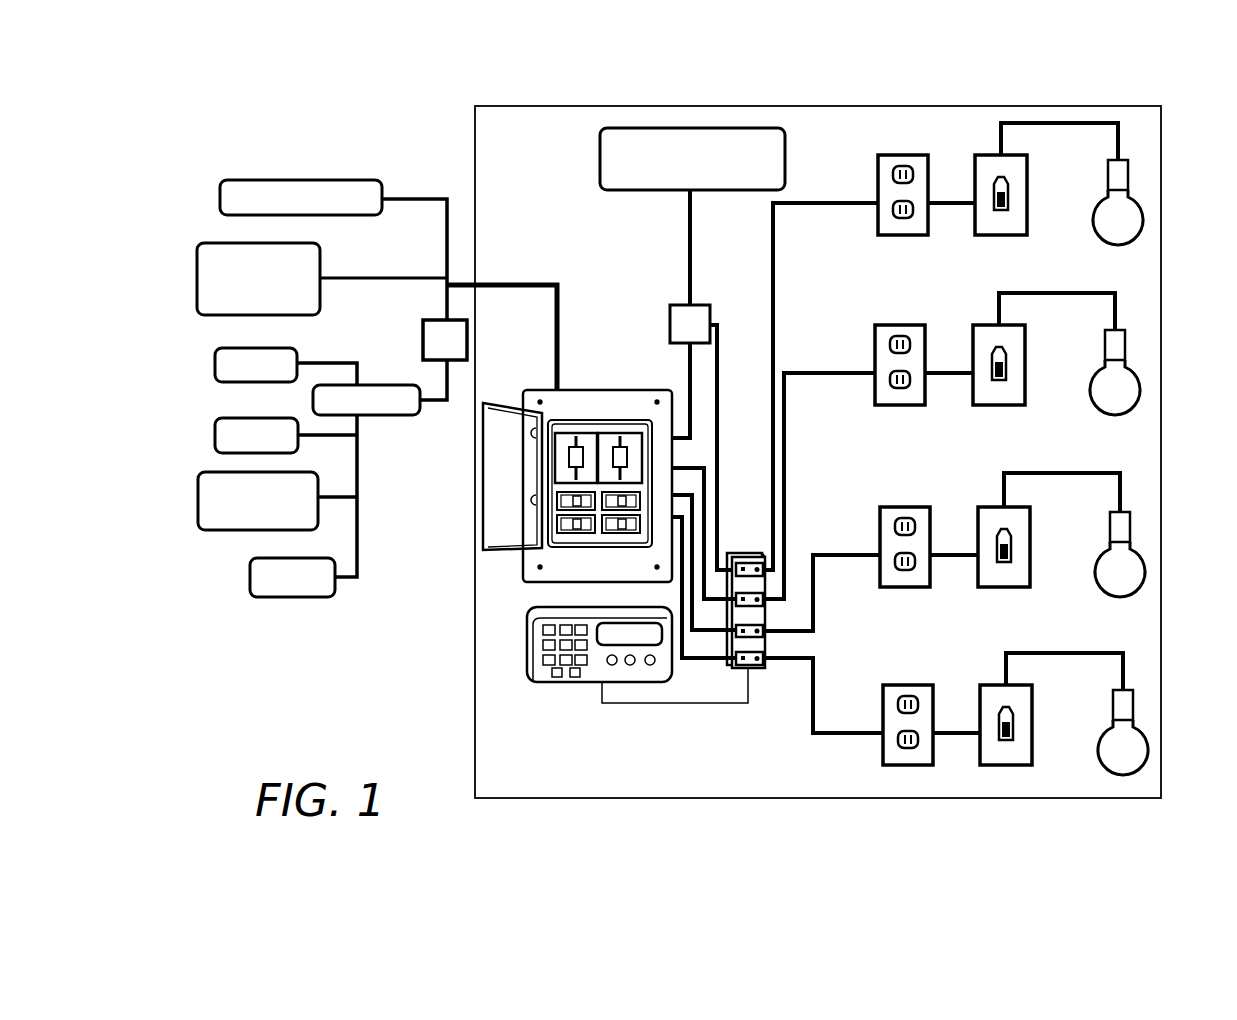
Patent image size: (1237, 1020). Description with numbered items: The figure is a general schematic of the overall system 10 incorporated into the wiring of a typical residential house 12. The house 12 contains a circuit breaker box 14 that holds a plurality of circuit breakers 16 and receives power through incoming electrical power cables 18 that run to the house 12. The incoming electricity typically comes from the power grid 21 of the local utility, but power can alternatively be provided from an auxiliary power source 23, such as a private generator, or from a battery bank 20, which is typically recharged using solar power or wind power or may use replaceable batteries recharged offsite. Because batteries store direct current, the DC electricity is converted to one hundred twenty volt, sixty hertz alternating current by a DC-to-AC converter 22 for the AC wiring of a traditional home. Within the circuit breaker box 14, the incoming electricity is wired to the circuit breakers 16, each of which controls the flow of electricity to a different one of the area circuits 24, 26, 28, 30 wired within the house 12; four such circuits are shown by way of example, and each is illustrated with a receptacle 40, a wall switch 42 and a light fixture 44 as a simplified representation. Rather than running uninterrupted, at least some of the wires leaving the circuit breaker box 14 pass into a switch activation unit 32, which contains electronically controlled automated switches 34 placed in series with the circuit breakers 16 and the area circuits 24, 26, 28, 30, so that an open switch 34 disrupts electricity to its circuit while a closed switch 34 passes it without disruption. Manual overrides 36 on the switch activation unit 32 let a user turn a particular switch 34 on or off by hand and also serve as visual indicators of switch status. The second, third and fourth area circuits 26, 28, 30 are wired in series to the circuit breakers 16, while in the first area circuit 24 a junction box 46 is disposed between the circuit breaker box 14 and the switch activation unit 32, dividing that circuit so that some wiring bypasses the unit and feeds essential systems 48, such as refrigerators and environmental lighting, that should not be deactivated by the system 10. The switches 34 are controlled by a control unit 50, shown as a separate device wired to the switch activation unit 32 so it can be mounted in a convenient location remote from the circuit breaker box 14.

The system 10 is at (430, 103).
The residential house 12 is at (1161, 472).
The circuit breaker box 14 is at (625, 388).
The circuit breakers 16 is at (568, 527).
The incoming electrical power cables 18 is at (558, 352).
The battery bank 20 is at (373, 415).
The power grid 21 is at (365, 178).
The DC-to-AC converter 22 is at (423, 337).
The auxiliary power source 23 is at (320, 262).
The first area circuit 24 is at (837, 200).
The second area circuit 26 is at (828, 370).
The third area circuit 28 is at (845, 552).
The fourth area circuit 30 is at (852, 732).
The switch activation unit 32 is at (747, 550).
The automated switches 34 is at (767, 670).
The manual overrides 36 is at (740, 665).
The receptacle 40 is at (905, 235).
The wall switch 42 is at (1003, 235).
The light fixture 44 is at (1117, 177).
The junction box 46 is at (680, 303).
The essential systems 48 is at (655, 190).
The control unit 50 is at (575, 683).